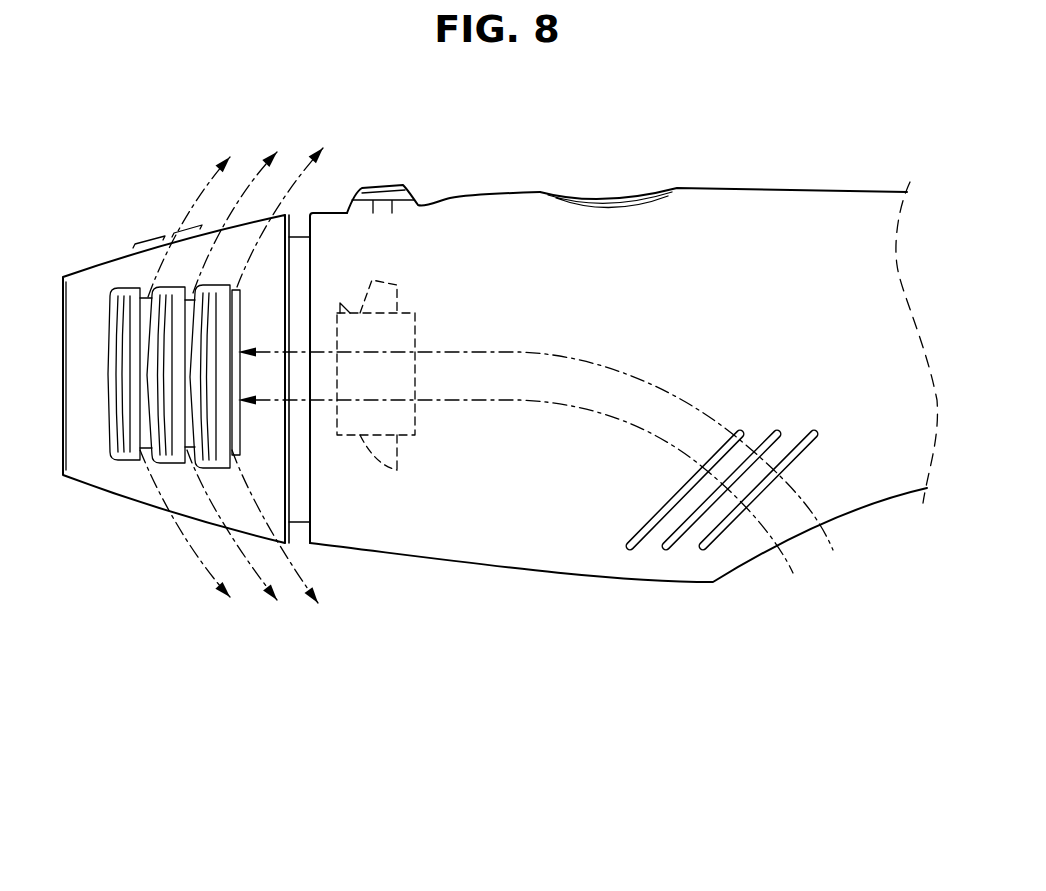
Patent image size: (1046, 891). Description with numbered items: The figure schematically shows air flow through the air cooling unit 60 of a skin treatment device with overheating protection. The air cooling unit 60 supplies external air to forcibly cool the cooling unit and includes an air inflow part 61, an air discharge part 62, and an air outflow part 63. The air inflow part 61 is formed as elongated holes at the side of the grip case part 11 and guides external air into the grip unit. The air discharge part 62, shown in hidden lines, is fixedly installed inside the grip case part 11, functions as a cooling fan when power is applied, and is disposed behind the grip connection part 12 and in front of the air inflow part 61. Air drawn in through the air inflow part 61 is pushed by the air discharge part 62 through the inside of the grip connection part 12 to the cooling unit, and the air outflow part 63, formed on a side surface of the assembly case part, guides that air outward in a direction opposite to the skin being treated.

The grip case part 11 is at (757, 188).
The grip connection part 12 is at (297, 247).
The air cooling unit 60 is at (438, 491).
The air inflow part 61 is at (703, 561).
The air discharge part 62 is at (398, 417).
The air outflow part 63 is at (123, 417).